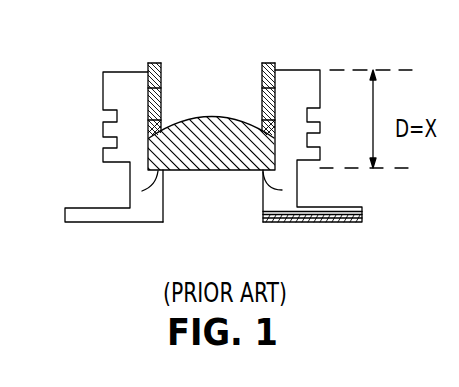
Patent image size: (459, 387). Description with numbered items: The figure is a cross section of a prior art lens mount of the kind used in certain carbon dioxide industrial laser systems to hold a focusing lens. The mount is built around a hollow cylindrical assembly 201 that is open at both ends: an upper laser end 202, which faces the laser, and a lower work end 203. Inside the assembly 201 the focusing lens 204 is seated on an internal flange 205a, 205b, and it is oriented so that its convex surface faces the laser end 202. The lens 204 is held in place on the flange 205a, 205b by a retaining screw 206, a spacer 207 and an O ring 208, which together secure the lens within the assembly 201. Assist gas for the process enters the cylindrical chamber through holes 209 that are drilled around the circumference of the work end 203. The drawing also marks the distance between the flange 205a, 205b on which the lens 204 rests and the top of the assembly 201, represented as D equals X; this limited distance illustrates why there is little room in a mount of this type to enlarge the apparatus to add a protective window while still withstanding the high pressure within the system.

The hollow cylindrical assembly 201 is at (128, 72).
The laser end opening 202 is at (211, 93).
The work end opening 203 is at (237, 222).
The focusing lens 204 is at (197, 117).
The flange 205a is at (282, 190).
The flange 205b is at (142, 191).
The retaining screw 206 is at (264, 63).
The spacer 207 is at (277, 103).
The O ring 208 is at (276, 118).
The assist gas holes 209 is at (360, 210).